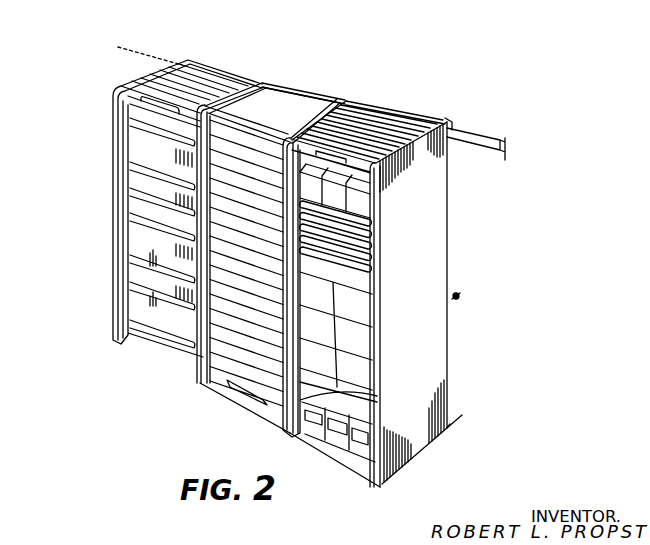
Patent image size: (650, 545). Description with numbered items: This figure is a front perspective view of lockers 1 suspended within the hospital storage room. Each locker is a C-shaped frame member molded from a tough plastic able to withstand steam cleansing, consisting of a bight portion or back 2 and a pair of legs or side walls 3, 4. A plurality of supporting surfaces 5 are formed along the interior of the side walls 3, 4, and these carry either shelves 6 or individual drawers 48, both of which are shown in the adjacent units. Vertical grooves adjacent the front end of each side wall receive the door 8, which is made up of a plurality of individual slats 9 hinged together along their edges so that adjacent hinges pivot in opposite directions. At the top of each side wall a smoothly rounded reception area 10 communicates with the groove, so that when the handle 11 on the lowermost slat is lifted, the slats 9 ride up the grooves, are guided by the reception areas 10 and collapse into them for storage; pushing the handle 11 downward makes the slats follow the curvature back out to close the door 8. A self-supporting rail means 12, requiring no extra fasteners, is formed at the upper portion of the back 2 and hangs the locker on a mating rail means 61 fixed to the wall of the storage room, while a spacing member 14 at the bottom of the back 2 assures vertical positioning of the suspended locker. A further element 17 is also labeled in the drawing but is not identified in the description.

The lockers 1 is at (108, 152).
The back 2 is at (400, 108).
The side wall 3 is at (432, 205).
The side wall 4 is at (323, 130).
The supporting surfaces 5 is at (293, 424).
The shelves 6 is at (373, 277).
The door 8 is at (370, 118).
The slats 9 is at (198, 389).
The reception area 10 is at (254, 102).
The handle 11 is at (252, 402).
The self-supporting rail means 12 is at (450, 120).
The spacing member 14 is at (452, 411).
The fastener 17 is at (306, 76).
The individual drawers 48 is at (133, 204).
The mating rail means 61 is at (500, 132).